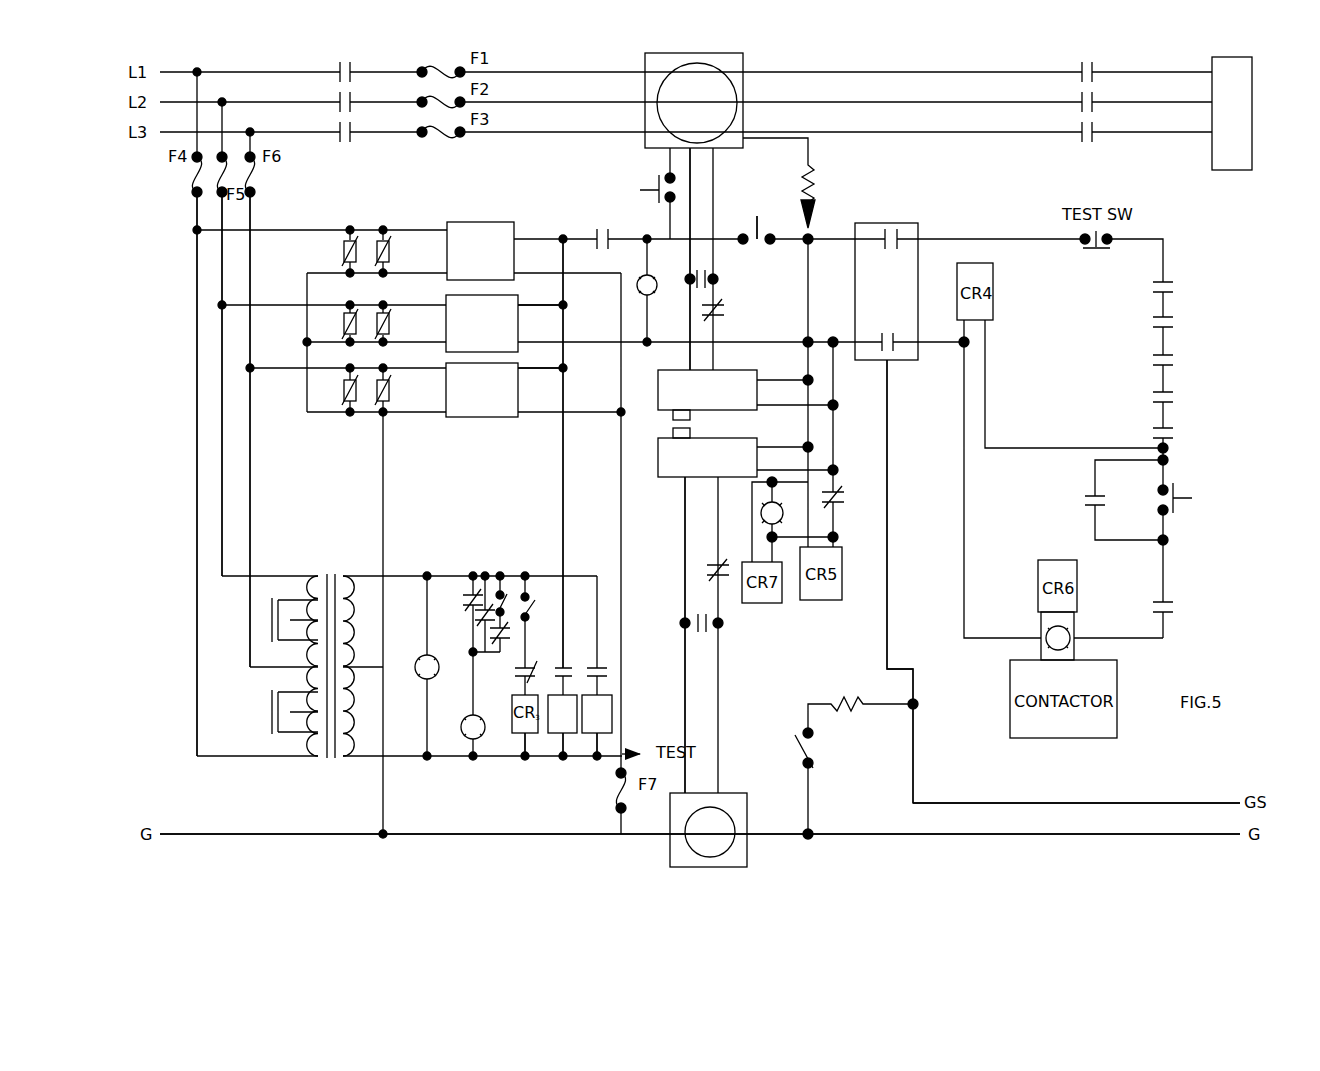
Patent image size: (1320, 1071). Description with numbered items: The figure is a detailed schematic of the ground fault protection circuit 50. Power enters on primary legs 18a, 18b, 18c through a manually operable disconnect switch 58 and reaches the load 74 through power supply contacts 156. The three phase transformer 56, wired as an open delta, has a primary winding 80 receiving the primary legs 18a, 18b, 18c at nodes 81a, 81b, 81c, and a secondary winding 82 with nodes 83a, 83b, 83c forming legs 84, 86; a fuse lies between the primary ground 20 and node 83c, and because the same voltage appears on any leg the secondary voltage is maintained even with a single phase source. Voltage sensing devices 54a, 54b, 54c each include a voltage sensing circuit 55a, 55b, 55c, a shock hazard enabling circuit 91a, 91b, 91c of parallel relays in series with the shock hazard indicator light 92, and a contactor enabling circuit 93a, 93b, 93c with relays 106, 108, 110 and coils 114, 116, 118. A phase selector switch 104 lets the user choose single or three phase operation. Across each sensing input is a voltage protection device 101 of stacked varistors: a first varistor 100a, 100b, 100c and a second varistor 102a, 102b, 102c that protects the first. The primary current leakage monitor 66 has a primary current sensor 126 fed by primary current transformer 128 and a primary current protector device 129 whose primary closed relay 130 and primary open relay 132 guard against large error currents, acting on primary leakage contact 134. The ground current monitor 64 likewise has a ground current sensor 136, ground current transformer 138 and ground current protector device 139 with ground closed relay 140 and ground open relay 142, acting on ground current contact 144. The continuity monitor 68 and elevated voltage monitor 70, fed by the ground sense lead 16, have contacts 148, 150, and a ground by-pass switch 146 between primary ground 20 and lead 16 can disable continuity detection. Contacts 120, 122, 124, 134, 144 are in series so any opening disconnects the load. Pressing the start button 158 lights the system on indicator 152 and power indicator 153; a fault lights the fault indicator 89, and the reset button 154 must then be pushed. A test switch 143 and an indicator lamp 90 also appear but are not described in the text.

The disconnect switch 58 is at (362, 62).
The circuit 50 is at (978, 60).
The primary current transformer 128 is at (743, 56).
The primary current leakage monitor 66 is at (768, 152).
The power supply contacts 156 is at (1068, 116).
The load 74 is at (1252, 140).
The test switch 143 is at (656, 186).
The primary current protector device 129 is at (701, 262).
The primary open relay 132 is at (709, 280).
The primary closed relay 130 is at (725, 311).
The reset button 154 is at (762, 232).
The system on indicator light 152 is at (637, 292).
The continuity monitor 68 is at (878, 217).
The elevated voltage monitor 70 is at (908, 217).
The contact 148 is at (900, 240).
The contact 150 is at (897, 350).
The ground sense lead 16 is at (1157, 801).
The ground current contact 144 is at (1173, 285).
The primary leakage contact 134 is at (1173, 320).
The first leg contact 120 is at (1173, 358).
The second leg contact 122 is at (1173, 395).
The third leg contact 124 is at (1173, 431).
The start button 158 is at (1178, 490).
The power indicator light 153 is at (1068, 630).
The ground current monitor 64 is at (872, 610).
The ground by-pass switch 146 is at (815, 762).
The primary current sensor 126 is at (735, 370).
The ground current sensor 136 is at (672, 480).
The fault indicator light 89 is at (760, 518).
The ground closed relay 140 is at (722, 578).
The ground open relay 142 is at (710, 630).
The ground current protector device 139 is at (691, 591).
The ground current transformer 138 is at (747, 815).
The primary leg 18a is at (197, 370).
The primary leg 18b is at (222, 418).
The primary leg 18c is at (250, 457).
The voltage protection device 101 is at (296, 512).
The first varistor 100a is at (354, 242).
The second varistor 102a is at (388, 242).
The first varistor 100b is at (350, 323).
The second varistor 102b is at (390, 323).
The first varistor 100c is at (347, 392).
The second varistor 102c is at (390, 392).
The voltage sensing device 54a is at (470, 212).
The voltage sensing circuit 55a is at (494, 221).
The voltage sensing device 54b is at (496, 288).
The voltage sensing circuit 55b is at (520, 296).
The voltage sensing device 54c is at (480, 428).
The voltage sensing circuit 55c is at (502, 418).
The transformer 56 is at (386, 660).
The primary winding 80 is at (303, 562).
The secondary winding 82 is at (348, 562).
The node 81a is at (306, 576).
The node 81b is at (252, 664).
The node 81c is at (312, 753).
The node 83a is at (352, 581).
The node 83b is at (383, 669).
The node 83c is at (352, 757).
The leg 84 is at (367, 630).
The leg 86 is at (348, 716).
The primary ground 20 is at (323, 830).
The line lamp 90 is at (438, 664).
The shock hazard indicator light 92 is at (462, 736).
The shock hazard enabling circuit 91a is at (462, 588).
The shock hazard enabling circuit 91b is at (483, 568).
The shock hazard enabling circuit 91c is at (506, 568).
The phase selector switch 104 is at (517, 606).
The relay 110 is at (566, 664).
The relay 108 is at (518, 660).
The relay 106 is at (598, 666).
The coil 114 is at (612, 696).
The coil 116 is at (588, 710).
The coil 118 is at (540, 735).
The contactor enabling circuit 93a is at (596, 764).
The contactor enabling circuit 93b is at (554, 764).
The contactor enabling circuit 93c is at (512, 764).